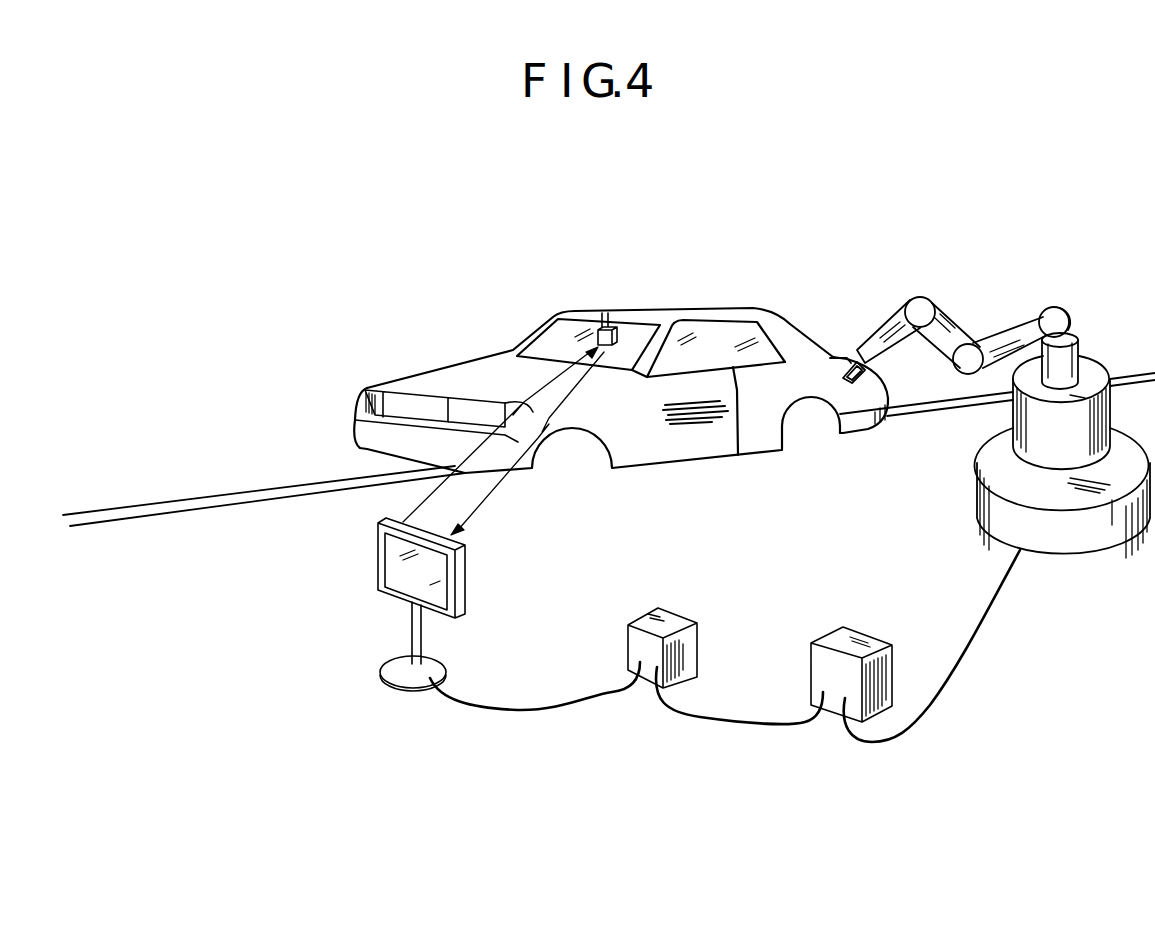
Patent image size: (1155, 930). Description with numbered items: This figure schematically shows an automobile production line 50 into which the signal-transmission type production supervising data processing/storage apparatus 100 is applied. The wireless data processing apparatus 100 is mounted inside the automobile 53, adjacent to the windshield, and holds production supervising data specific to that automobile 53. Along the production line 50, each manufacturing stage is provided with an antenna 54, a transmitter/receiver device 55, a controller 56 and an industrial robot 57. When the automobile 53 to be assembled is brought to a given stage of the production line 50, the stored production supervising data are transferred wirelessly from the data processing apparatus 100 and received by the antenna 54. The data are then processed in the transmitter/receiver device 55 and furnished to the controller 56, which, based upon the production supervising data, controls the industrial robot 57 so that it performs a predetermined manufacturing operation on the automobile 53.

The automobile production line 50 is at (120, 507).
The automobile 53 is at (752, 308).
The antenna 54 is at (462, 550).
The transmitter/receiver device 55 is at (647, 613).
The controller 56 is at (843, 627).
The industrial robot 57 is at (1078, 556).
The production supervising data processing/storage apparatus 100 is at (600, 318).